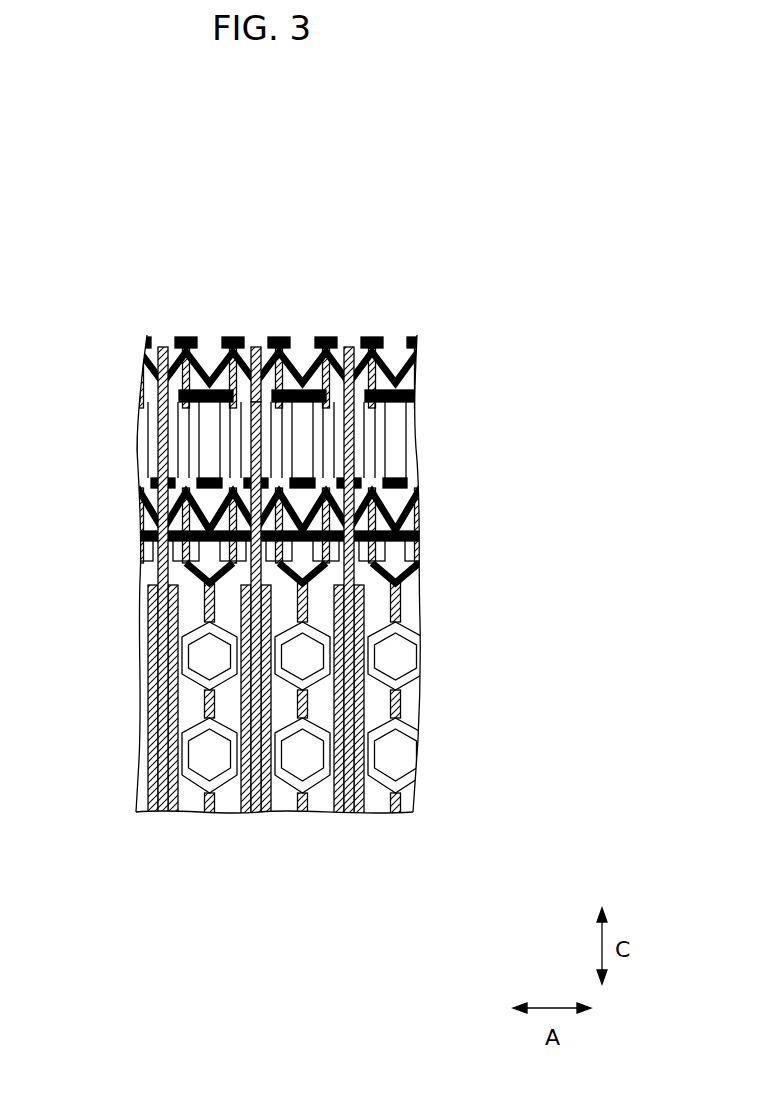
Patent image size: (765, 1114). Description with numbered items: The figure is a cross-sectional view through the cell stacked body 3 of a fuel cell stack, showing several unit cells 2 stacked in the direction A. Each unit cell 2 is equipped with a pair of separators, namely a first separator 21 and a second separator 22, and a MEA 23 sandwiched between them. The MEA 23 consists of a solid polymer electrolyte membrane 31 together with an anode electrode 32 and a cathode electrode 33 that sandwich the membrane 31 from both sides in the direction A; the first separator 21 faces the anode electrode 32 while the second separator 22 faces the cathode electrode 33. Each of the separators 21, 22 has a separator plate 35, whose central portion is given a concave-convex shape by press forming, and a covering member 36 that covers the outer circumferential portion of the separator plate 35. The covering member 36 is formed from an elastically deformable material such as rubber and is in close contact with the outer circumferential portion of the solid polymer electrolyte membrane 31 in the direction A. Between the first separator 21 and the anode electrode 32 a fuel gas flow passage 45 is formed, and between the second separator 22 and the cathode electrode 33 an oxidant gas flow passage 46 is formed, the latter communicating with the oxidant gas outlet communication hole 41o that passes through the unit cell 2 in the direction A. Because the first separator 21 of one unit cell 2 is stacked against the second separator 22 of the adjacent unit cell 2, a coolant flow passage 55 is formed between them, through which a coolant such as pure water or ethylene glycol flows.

The unit cell 2 is at (273, 450).
The first separator 21 is at (233, 342).
The second separator 22 is at (279, 342).
The MEA 23 is at (256, 374).
The cell stacked body 3 is at (425, 337).
The covering member 36 is at (279, 441).
The oxidant gas outlet communication hole 41o is at (266, 440).
The fuel gas flow passage 45 is at (302, 592).
The oxidant gas flow passage 46 is at (303, 752).
The coolant flow passage 55 is at (302, 656).
The separator plate 35 is at (302, 755).
The anode electrode 32 is at (246, 700).
The cathode electrode 33 is at (266, 700).
The solid polymer electrolyte membrane 31 is at (256, 581).